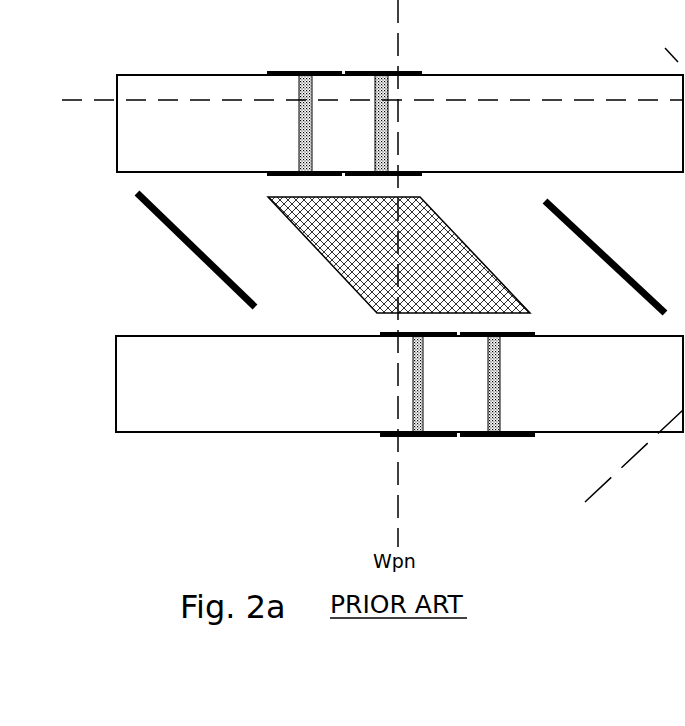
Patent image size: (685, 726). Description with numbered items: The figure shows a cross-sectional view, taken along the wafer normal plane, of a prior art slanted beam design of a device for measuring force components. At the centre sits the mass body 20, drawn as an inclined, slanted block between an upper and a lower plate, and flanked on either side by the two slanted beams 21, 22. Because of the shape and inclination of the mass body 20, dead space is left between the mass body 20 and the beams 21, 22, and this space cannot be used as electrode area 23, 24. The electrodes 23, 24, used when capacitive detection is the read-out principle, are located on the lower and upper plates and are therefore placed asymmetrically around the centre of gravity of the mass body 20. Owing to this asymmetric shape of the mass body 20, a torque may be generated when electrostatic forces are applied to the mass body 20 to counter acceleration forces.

The mass body 20 is at (465, 250).
The beam 21 is at (587, 232).
The beam 22 is at (198, 262).
The electrode area 23 is at (507, 332).
The electrode area 24 is at (300, 176).